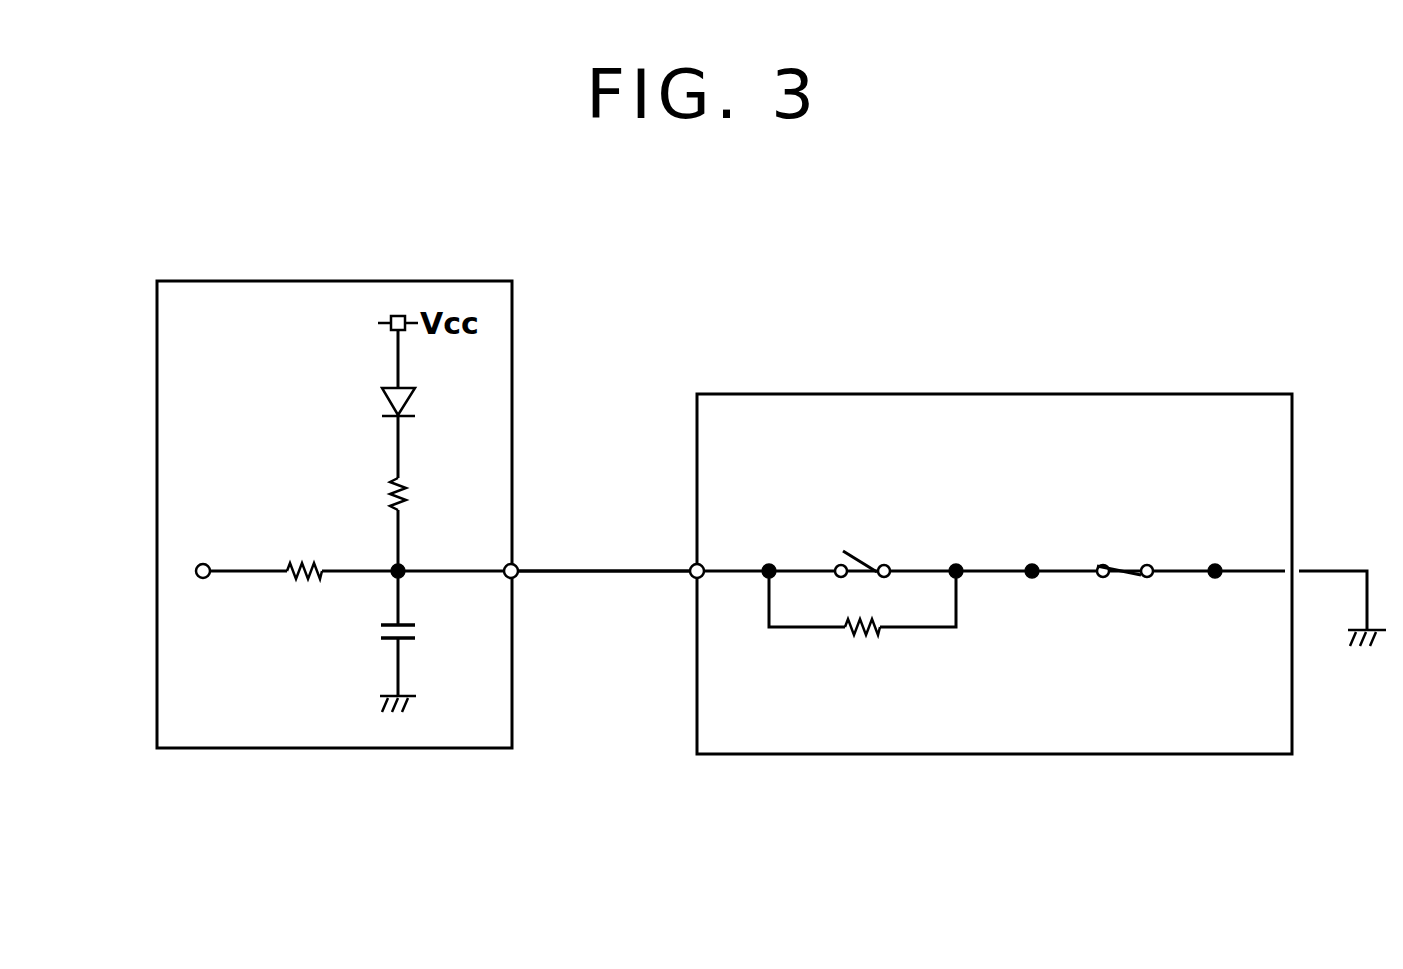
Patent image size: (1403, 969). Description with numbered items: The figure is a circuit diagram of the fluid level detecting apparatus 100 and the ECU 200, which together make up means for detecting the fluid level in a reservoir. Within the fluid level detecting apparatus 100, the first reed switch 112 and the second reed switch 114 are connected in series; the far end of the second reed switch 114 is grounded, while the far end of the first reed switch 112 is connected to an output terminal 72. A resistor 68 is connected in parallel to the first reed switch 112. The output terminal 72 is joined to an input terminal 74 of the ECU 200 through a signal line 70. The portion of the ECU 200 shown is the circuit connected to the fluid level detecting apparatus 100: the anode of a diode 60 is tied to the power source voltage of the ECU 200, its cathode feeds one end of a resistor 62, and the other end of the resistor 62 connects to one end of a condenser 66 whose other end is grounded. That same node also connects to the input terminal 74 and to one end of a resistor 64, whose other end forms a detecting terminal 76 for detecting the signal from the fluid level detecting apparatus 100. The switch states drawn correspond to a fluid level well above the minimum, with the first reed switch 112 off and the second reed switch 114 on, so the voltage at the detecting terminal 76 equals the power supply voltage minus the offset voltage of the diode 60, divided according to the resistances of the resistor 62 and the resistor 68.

The ECU 200 is at (333, 281).
The fluid level detecting apparatus 100 is at (995, 394).
The diode 60 is at (420, 400).
The resistor 62 is at (412, 490).
The resistor 64 is at (308, 556).
The condenser 66 is at (420, 630).
The resistor 68 is at (863, 640).
The signal line 70 is at (603, 570).
The output terminal 72 is at (690, 578).
The input terminal 74 is at (518, 578).
The detecting terminal 76 is at (206, 562).
The first reed switch 112 is at (870, 548).
The second reed switch 114 is at (1128, 550).